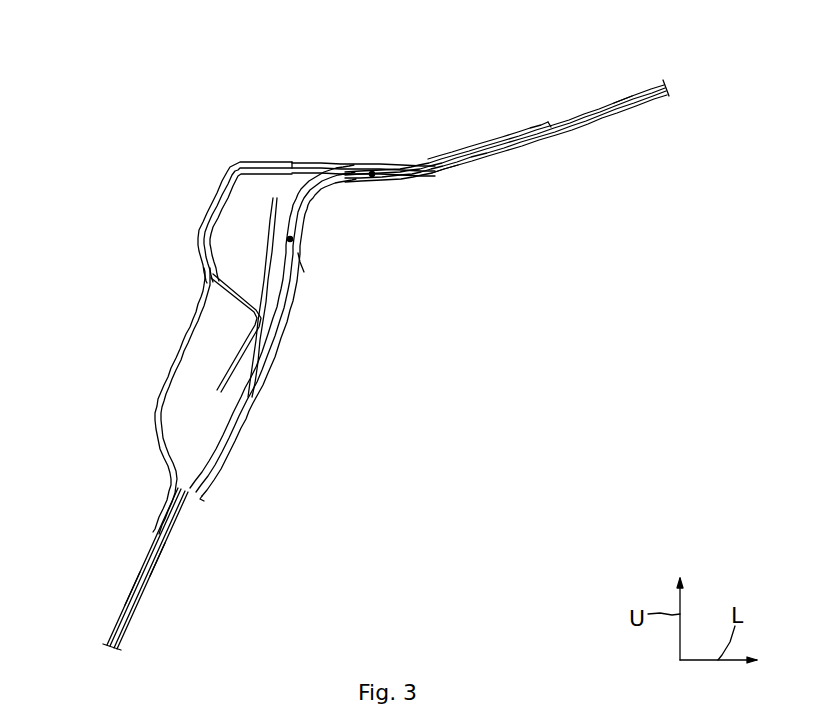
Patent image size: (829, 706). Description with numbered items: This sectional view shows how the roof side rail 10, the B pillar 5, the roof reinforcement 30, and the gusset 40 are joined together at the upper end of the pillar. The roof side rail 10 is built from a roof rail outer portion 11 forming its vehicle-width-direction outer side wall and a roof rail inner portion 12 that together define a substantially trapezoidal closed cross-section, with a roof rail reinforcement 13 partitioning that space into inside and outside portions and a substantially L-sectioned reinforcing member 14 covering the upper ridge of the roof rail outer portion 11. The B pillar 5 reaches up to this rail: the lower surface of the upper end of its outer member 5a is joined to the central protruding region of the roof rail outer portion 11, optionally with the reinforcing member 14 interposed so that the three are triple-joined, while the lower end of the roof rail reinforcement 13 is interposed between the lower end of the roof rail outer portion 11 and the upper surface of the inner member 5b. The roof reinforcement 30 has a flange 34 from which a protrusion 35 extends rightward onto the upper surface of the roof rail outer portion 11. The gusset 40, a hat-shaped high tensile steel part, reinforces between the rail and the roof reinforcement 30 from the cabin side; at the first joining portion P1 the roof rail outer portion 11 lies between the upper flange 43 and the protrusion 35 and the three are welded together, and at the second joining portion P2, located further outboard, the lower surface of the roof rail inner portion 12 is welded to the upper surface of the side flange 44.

The B pillar 5 is at (133, 551).
The outer member 5a is at (90, 584).
The inner member 5b is at (187, 577).
The roof side rail 10 is at (226, 170).
The roof rail outer portion 11 is at (229, 297).
The roof rail inner portion 12 is at (273, 333).
The roof rail reinforcement 13 is at (256, 297).
The reinforcing member 14 is at (245, 191).
The roof reinforcement 30 is at (612, 99).
The flange 34 is at (502, 96).
The protrusion 35 is at (363, 141).
The gusset 40 is at (496, 158).
The upper flange 43 is at (461, 211).
The side flange 44 is at (313, 316).
The first joining portion P1 is at (364, 130).
The second joining portion P2 is at (317, 279).